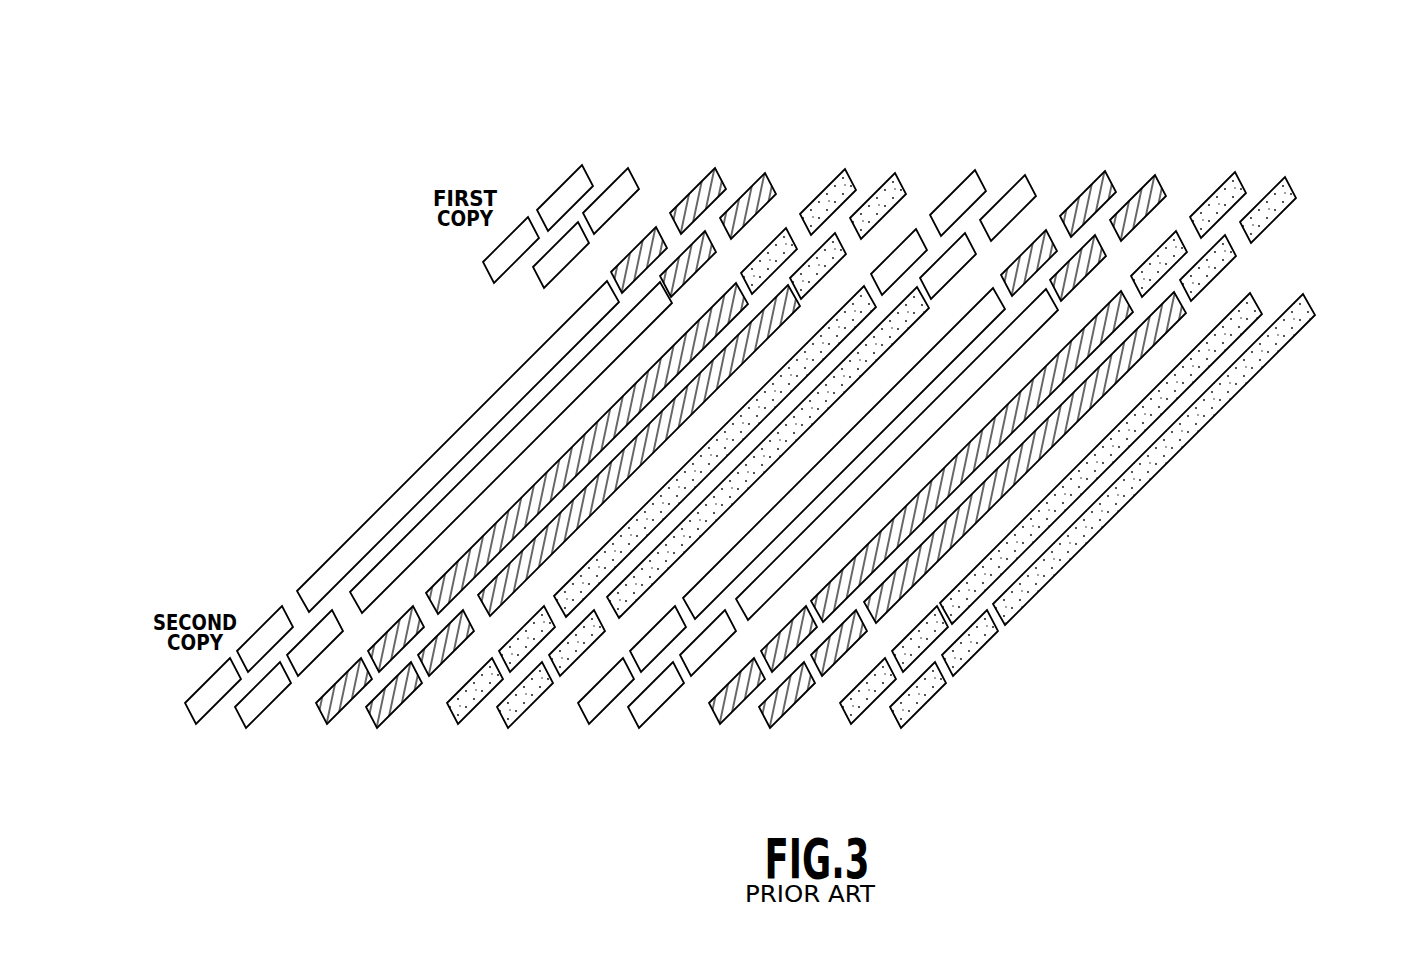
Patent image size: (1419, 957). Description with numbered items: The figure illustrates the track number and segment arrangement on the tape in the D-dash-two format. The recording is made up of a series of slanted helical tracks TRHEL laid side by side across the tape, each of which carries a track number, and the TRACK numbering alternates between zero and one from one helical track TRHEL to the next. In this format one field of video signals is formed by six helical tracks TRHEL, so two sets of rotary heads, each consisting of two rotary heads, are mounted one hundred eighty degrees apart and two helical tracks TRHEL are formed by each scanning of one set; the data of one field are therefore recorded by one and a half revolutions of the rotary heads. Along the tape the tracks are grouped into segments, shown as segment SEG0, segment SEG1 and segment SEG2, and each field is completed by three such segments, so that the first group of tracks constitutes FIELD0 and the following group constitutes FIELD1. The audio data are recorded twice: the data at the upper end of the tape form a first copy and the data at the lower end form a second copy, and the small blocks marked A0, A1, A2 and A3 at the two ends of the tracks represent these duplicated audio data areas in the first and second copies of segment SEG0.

The segment 0 SEG0 is at (428, 446).
The segment 1 SEG1 is at (723, 175).
The segment 2 SEG2 is at (837, 172).
The helical track TRHEL is at (1006, 173).
The address block A0 is at (387, 473).
The address block A1 is at (438, 420).
The address block A2 is at (387, 472).
The address block A3 is at (541, 278).
The field 0 FIELD0 is at (727, 75).
The field 1 FIELD1 is at (1103, 143).
The track numbering (0/1) TRACK is at (158, 723).